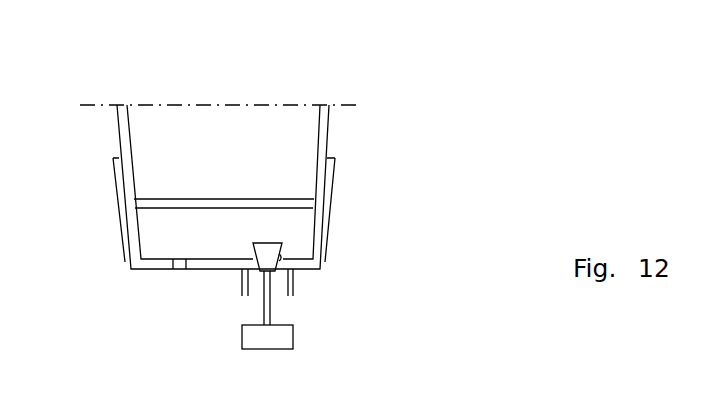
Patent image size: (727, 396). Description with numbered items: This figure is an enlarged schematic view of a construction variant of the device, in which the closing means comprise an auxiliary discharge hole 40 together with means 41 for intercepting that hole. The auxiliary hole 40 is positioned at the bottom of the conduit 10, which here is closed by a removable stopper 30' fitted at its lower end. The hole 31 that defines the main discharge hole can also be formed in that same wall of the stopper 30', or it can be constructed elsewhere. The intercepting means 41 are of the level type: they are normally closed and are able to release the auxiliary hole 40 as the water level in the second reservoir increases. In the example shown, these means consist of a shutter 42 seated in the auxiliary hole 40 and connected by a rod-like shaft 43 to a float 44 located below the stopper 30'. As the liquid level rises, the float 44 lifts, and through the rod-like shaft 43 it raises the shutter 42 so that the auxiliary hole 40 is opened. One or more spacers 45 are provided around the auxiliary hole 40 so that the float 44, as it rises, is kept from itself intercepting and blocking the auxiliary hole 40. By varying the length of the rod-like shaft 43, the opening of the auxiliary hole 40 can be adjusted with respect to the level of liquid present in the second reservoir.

The conduit 10 is at (335, 126).
The removable stopper 30' is at (189, 210).
The main discharge hole 31 is at (178, 270).
The auxiliary discharge hole 40 is at (283, 257).
The means for intercepting the auxiliary hole 41 is at (263, 299).
The shutter 42 is at (268, 243).
The rod-like shaft 43 is at (270, 302).
The float 44 is at (293, 338).
The spacers 45 is at (293, 283).